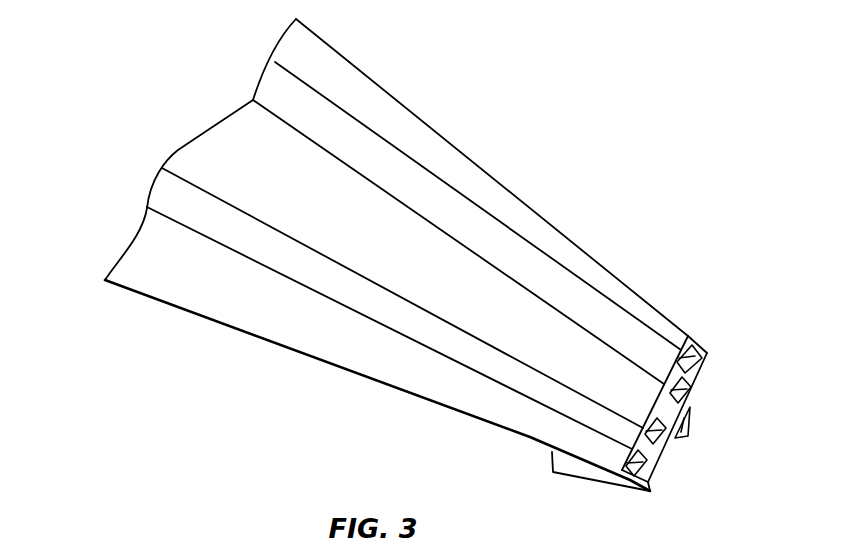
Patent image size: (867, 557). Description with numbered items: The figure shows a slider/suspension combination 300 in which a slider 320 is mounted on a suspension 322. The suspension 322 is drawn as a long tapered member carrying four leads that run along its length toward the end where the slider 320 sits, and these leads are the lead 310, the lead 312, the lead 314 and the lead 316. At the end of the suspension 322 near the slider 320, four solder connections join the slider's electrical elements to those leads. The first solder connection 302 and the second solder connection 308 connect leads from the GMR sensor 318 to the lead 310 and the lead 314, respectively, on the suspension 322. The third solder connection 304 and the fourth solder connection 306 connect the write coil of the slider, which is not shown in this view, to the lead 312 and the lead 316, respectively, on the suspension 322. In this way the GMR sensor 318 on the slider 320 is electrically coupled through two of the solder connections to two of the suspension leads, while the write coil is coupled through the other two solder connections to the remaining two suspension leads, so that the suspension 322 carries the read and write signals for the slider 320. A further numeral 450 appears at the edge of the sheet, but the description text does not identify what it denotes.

The slider/suspension combination 300 is at (104, 398).
The first solder connection 302 is at (640, 467).
The third solder connection 304 is at (660, 437).
The fourth solder connection 306 is at (692, 390).
The second solder connection 308 is at (710, 353).
The lead 310 is at (385, 330).
The lead 312 is at (520, 360).
The lead 314 is at (578, 275).
The lead 316 is at (578, 322).
The GMR sensor 318 is at (690, 420).
The slider 320 is at (583, 470).
The suspension 322 is at (488, 421).
The adjacent component 450 is at (106, 550).